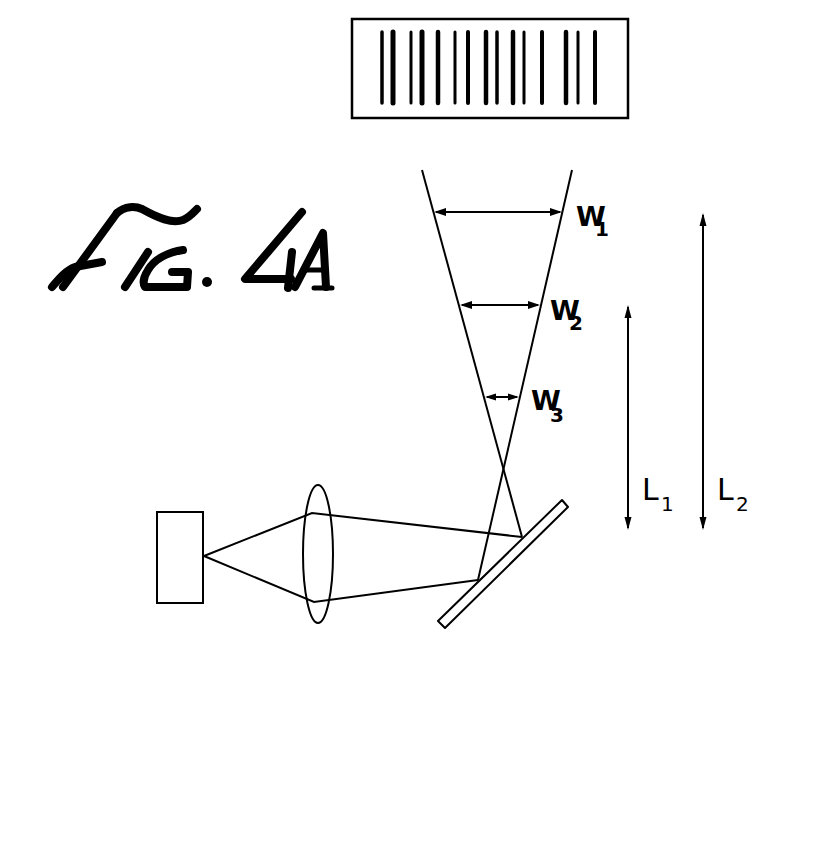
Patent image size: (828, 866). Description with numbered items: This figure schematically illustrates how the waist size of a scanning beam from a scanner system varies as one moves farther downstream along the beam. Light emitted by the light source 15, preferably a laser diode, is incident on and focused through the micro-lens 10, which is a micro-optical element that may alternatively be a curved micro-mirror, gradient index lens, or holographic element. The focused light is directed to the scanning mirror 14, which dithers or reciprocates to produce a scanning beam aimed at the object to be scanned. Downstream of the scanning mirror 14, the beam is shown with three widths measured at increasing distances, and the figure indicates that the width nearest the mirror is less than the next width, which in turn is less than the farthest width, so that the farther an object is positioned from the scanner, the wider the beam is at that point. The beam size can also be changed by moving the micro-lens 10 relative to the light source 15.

The micro-lens 10 is at (327, 482).
The scanning mirror 14 is at (513, 560).
The light source 15 is at (183, 533).